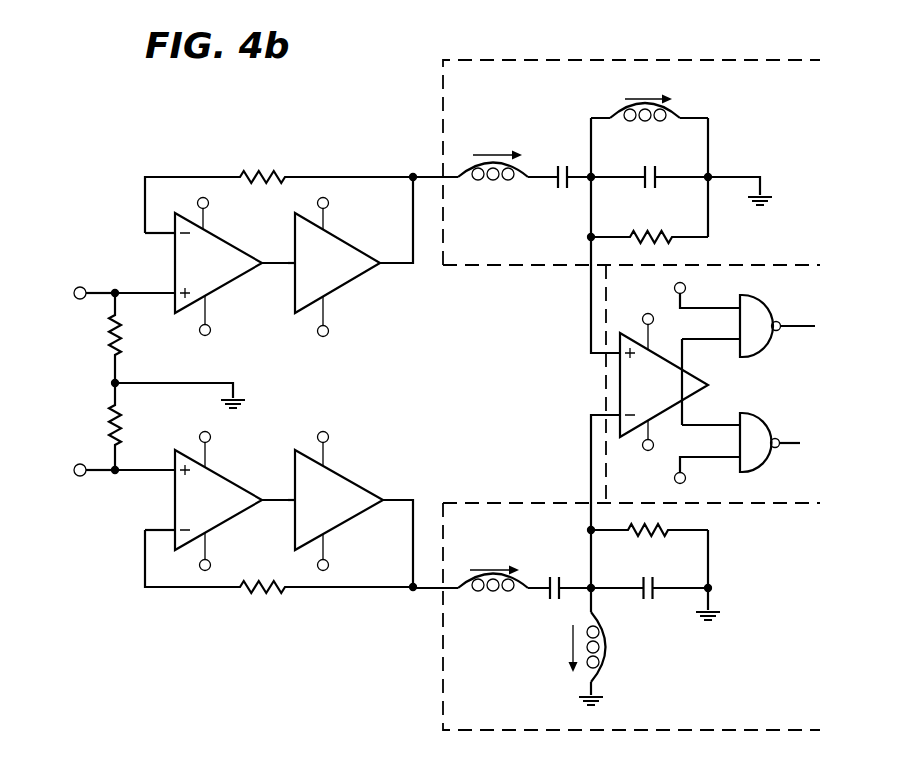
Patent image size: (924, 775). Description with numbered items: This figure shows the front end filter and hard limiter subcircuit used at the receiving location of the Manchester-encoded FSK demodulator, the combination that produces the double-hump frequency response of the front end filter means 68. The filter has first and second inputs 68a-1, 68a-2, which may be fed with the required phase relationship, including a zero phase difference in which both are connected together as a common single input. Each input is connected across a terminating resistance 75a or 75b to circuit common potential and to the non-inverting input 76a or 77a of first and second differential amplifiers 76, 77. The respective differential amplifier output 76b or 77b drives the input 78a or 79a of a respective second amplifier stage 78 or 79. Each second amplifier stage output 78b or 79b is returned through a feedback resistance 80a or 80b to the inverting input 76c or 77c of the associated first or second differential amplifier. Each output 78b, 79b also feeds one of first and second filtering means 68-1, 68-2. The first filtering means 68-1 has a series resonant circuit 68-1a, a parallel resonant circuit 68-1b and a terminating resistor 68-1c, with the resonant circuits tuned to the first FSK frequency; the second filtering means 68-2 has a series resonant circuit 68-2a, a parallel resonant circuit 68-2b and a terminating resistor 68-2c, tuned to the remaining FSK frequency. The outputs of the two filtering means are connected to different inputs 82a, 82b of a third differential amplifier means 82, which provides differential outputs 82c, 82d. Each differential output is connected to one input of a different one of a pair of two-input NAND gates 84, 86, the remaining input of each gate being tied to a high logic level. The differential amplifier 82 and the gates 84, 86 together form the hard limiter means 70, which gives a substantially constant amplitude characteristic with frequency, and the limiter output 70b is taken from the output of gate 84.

The front end filter means 68 is at (365, 384).
The first input 68a-1 is at (75, 298).
The second input 68a-2 is at (74, 480).
The terminating resistance 75a is at (108, 348).
The terminating resistance 75b is at (110, 418).
The first differential amplifier 76 is at (252, 258).
The non-inverting input 76a is at (167, 297).
The differential amplifier output 76b is at (267, 266).
The inverting input 76c is at (167, 236).
The second differential amplifier 77 is at (250, 492).
The non-inverting input 77a is at (146, 468).
The differential amplifier output 77b is at (268, 505).
The inverting input 77c is at (163, 530).
The second amplifier stage 78 is at (367, 254).
The input 78a is at (293, 263).
The second amplifier stage output 78b is at (395, 268).
The second amplifier stage 79 is at (365, 488).
The input 79a is at (285, 500).
The second amplifier stage output 79b is at (392, 506).
The feedback resistance 80a is at (257, 170).
The feedback resistance 80b is at (263, 594).
The first filtering means 68-1 is at (688, 181).
The series resonant circuit 68-1a is at (529, 181).
The parallel resonant circuit 68-1b is at (670, 212).
The terminating resistor 68-1c is at (658, 240).
The second filtering means 68-2 is at (683, 608).
The series resonant circuit 68-2a is at (533, 602).
The parallel resonant circuit 68-2b is at (628, 602).
The terminating resistor 68-2c is at (660, 528).
The third differential amplifier means 82 is at (618, 378).
The input 82a is at (591, 342).
The input 82b is at (591, 427).
The differential output 82c is at (713, 340).
The differential output 82d is at (698, 420).
The hard limiter means 70 is at (745, 382).
The limiter means output 70b is at (800, 324).
The NAND gate 84 is at (756, 298).
The NAND gate 86 is at (768, 459).